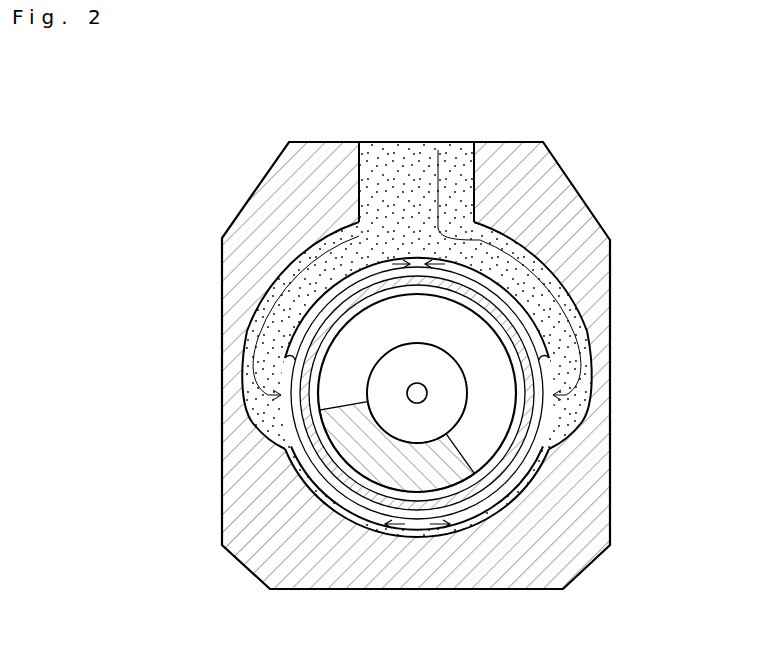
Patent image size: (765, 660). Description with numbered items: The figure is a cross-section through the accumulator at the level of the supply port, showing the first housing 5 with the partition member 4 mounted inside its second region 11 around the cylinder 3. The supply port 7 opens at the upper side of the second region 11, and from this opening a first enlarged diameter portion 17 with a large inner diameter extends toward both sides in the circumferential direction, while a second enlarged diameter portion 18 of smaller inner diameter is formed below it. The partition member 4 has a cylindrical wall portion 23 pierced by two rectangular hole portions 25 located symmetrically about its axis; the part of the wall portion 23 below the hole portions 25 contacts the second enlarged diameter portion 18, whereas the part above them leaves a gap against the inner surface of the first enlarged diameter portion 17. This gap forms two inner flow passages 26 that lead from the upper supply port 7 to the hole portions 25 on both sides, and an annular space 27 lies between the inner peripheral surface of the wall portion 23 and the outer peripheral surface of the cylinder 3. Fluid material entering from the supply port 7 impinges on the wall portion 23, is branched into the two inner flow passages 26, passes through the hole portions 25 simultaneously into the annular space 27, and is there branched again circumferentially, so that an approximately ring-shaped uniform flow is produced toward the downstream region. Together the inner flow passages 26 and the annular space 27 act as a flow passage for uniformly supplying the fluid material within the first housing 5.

The cylinder 3 is at (340, 305).
The partition member 4 is at (384, 532).
The first housing 5 is at (222, 300).
The supply port 7 is at (474, 181).
The second region 11 is at (578, 343).
The first enlarged diameter portion 17 is at (540, 277).
The second enlarged diameter portion 18 is at (452, 532).
The wall portion 23 is at (375, 255).
The hole portion 25 is at (272, 399).
The inner flow passage 26 is at (258, 330).
The annular space 27 is at (292, 462).